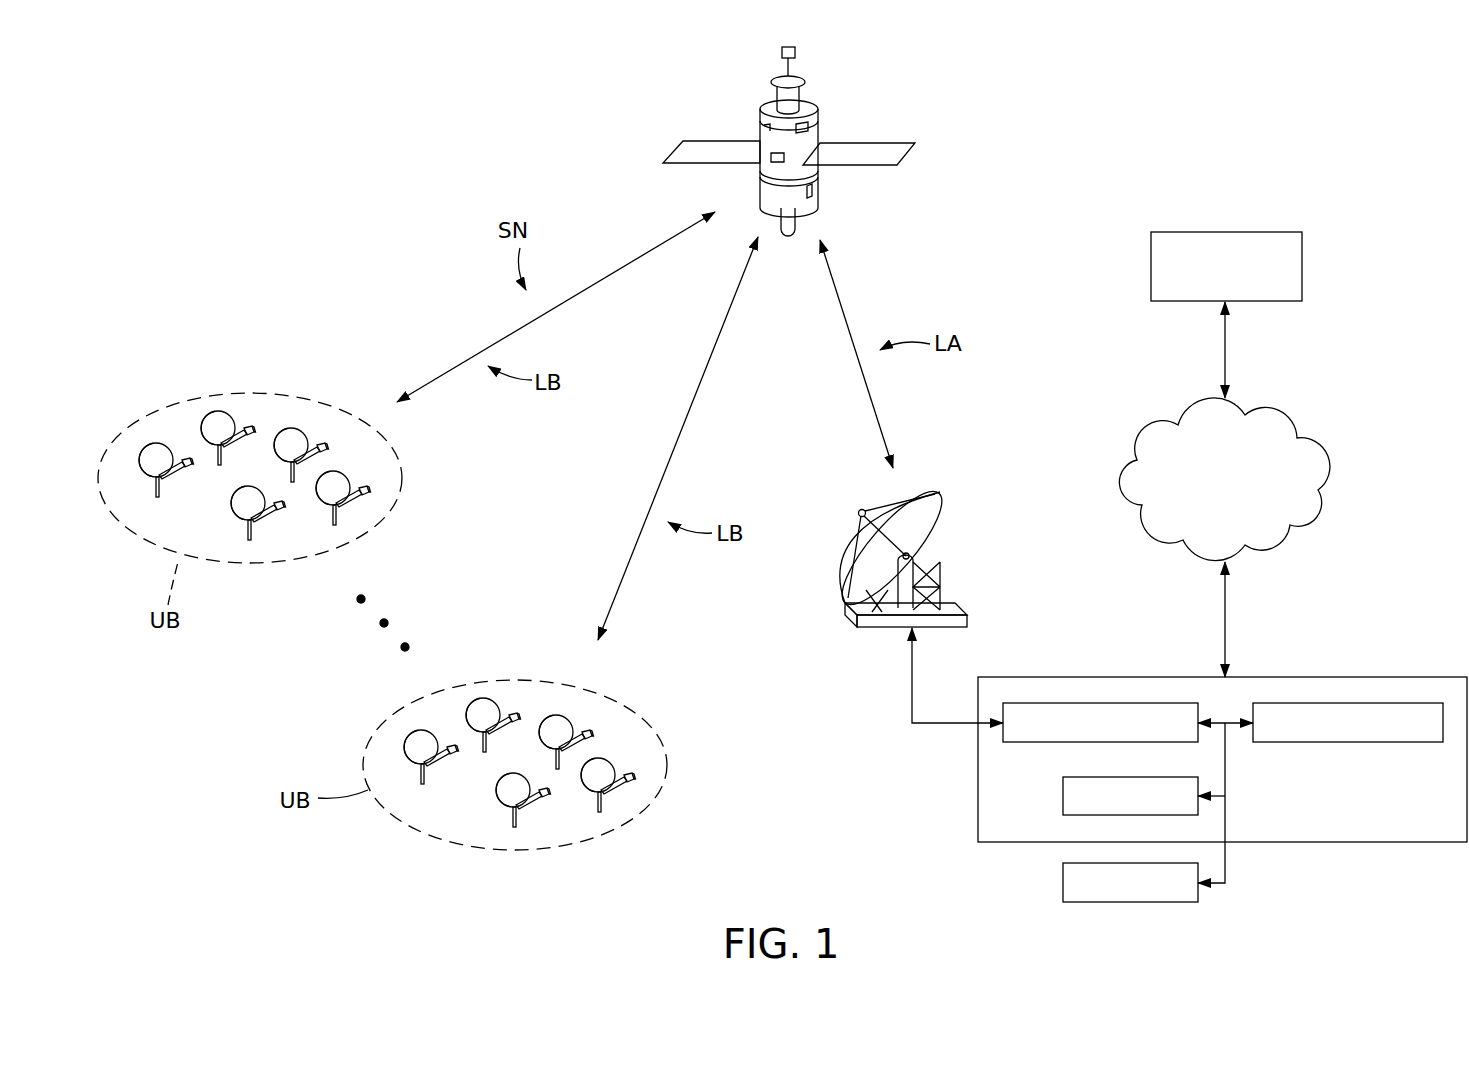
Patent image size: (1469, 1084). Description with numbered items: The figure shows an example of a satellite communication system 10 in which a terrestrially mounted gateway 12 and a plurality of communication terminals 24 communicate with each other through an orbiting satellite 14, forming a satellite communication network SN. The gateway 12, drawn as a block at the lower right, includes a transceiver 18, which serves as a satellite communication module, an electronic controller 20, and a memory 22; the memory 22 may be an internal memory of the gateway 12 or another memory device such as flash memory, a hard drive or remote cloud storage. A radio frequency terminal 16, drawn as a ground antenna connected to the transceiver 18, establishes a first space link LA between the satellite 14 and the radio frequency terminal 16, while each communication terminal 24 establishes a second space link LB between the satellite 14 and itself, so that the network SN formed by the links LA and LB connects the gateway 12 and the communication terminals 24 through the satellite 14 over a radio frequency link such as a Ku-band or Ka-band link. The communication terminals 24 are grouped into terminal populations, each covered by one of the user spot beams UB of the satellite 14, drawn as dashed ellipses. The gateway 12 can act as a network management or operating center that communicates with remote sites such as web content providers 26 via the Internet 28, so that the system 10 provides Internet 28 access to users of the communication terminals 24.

The satellite communication system 10 is at (1080, 172).
The gateway 12 is at (1097, 618).
The satellite 14 is at (850, 104).
The radio frequency terminal 16 is at (872, 629).
The transceiver 18 is at (1031, 744).
The electronic controller 20 is at (1378, 744).
The memory 22 is at (1130, 777).
The communication terminal 24 is at (160, 442).
The web content provider 26 is at (1265, 232).
The Internet 28 is at (1281, 412).